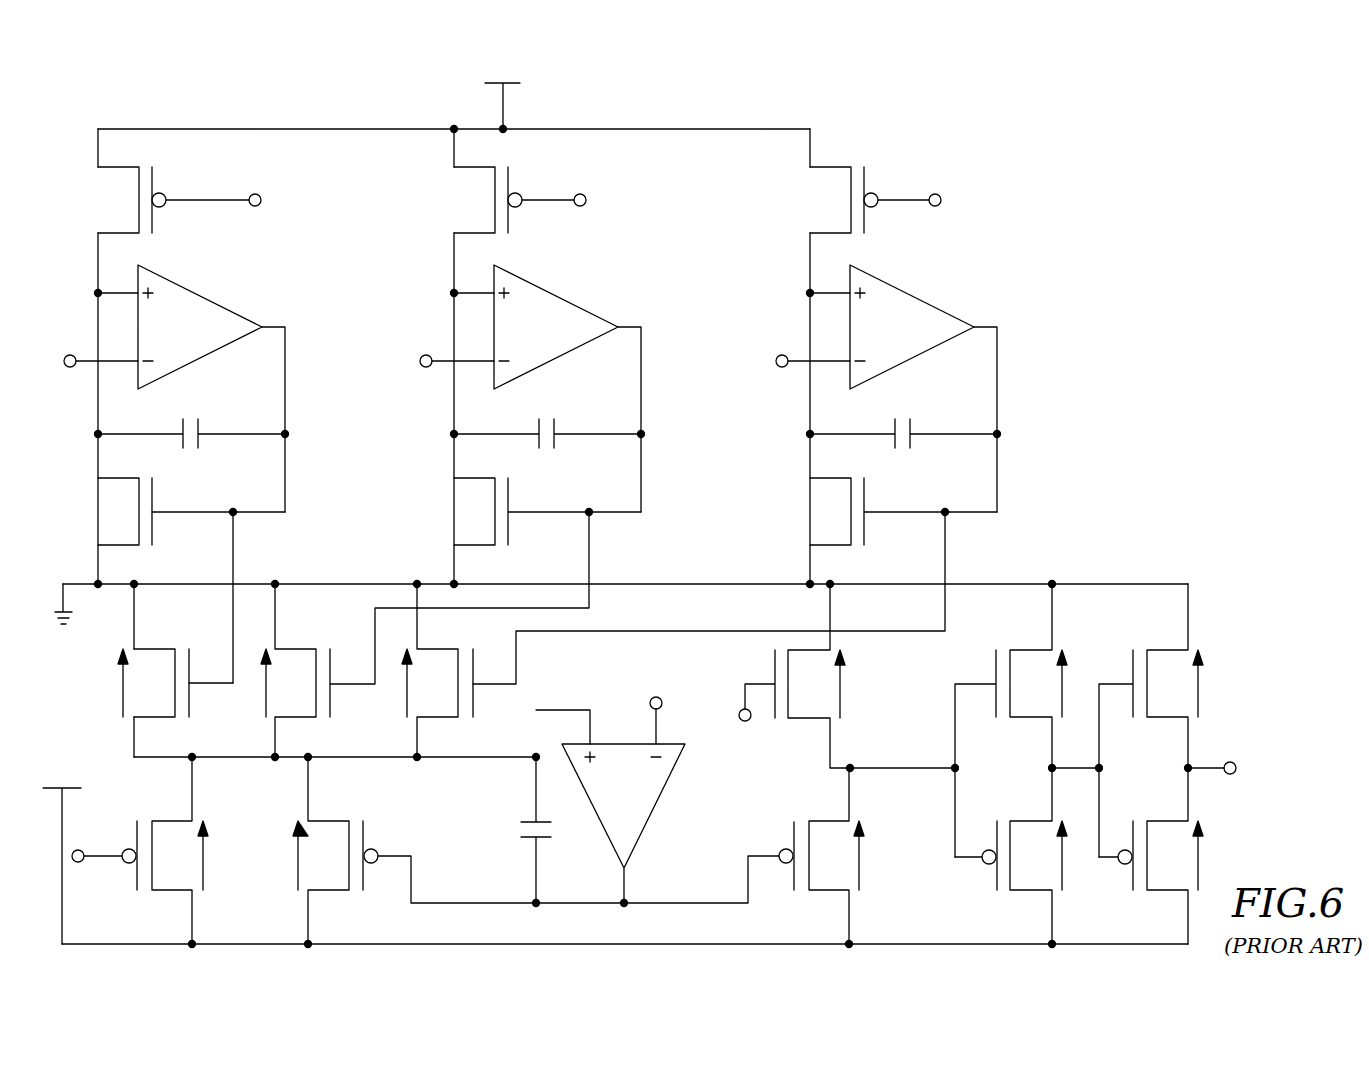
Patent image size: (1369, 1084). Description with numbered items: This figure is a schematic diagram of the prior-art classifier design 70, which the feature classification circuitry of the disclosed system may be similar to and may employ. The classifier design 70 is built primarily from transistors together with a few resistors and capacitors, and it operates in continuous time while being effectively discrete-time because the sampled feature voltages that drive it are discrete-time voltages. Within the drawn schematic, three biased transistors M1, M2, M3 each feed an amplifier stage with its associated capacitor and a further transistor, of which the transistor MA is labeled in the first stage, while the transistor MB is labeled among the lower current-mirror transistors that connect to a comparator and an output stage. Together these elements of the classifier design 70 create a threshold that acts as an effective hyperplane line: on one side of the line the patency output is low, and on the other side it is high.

The classifier design 70 is at (1050, 170).
The first PMOS transistor M1 is at (137, 188).
The second PMOS transistor M2 is at (493, 188).
The third PMOS transistor M3 is at (849, 188).
The transistor MA is at (140, 520).
The transistor MB is at (177, 694).